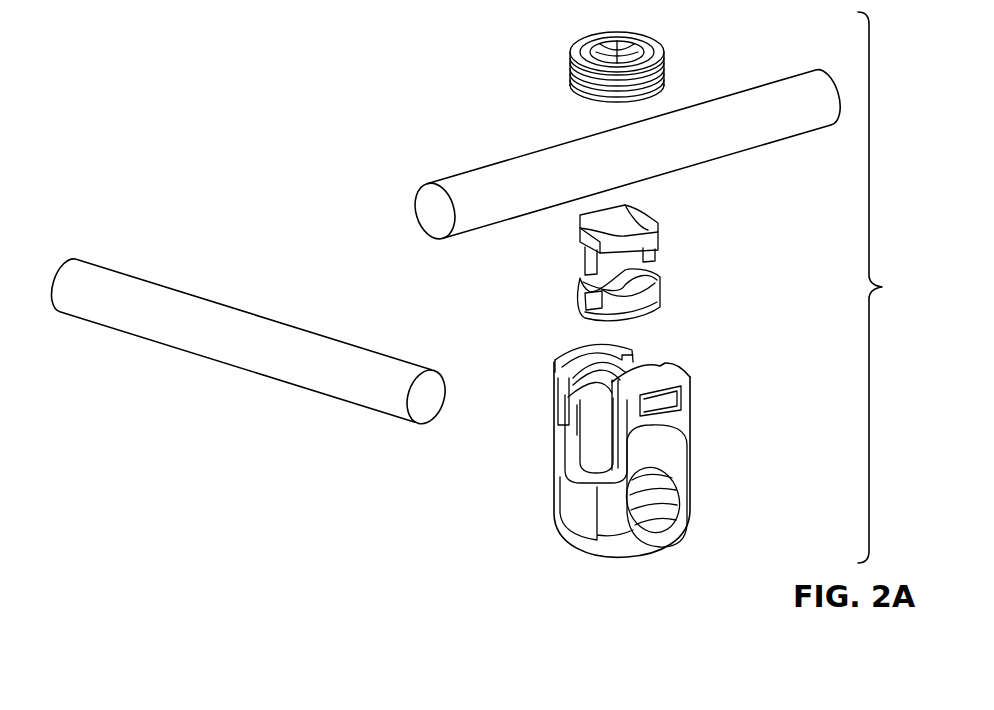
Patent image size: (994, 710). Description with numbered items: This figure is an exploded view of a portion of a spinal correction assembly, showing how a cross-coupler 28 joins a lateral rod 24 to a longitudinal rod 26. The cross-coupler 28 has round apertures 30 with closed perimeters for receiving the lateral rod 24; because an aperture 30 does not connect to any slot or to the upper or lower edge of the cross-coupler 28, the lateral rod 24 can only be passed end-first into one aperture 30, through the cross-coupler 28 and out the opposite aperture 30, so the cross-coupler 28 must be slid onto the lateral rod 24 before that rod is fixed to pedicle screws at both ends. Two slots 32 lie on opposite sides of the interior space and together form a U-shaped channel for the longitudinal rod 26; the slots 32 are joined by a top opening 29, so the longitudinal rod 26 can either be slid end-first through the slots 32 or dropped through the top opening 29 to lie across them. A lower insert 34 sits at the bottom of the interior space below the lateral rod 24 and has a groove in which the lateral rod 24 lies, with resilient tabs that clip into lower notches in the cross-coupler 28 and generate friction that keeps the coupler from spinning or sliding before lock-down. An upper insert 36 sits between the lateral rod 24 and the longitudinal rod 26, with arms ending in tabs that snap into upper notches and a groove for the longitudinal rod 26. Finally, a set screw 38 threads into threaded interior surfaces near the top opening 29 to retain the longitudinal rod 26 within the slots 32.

The lateral rod 24 is at (130, 337).
The longitudinal rod 26 is at (472, 173).
The cross-coupler 28 is at (626, 445).
The top opening 29 is at (577, 347).
The aperture 30 is at (680, 538).
The slot 32 is at (568, 467).
The lower insert 34 is at (663, 297).
The upper insert 36 is at (662, 232).
The set screw 38 is at (660, 48).